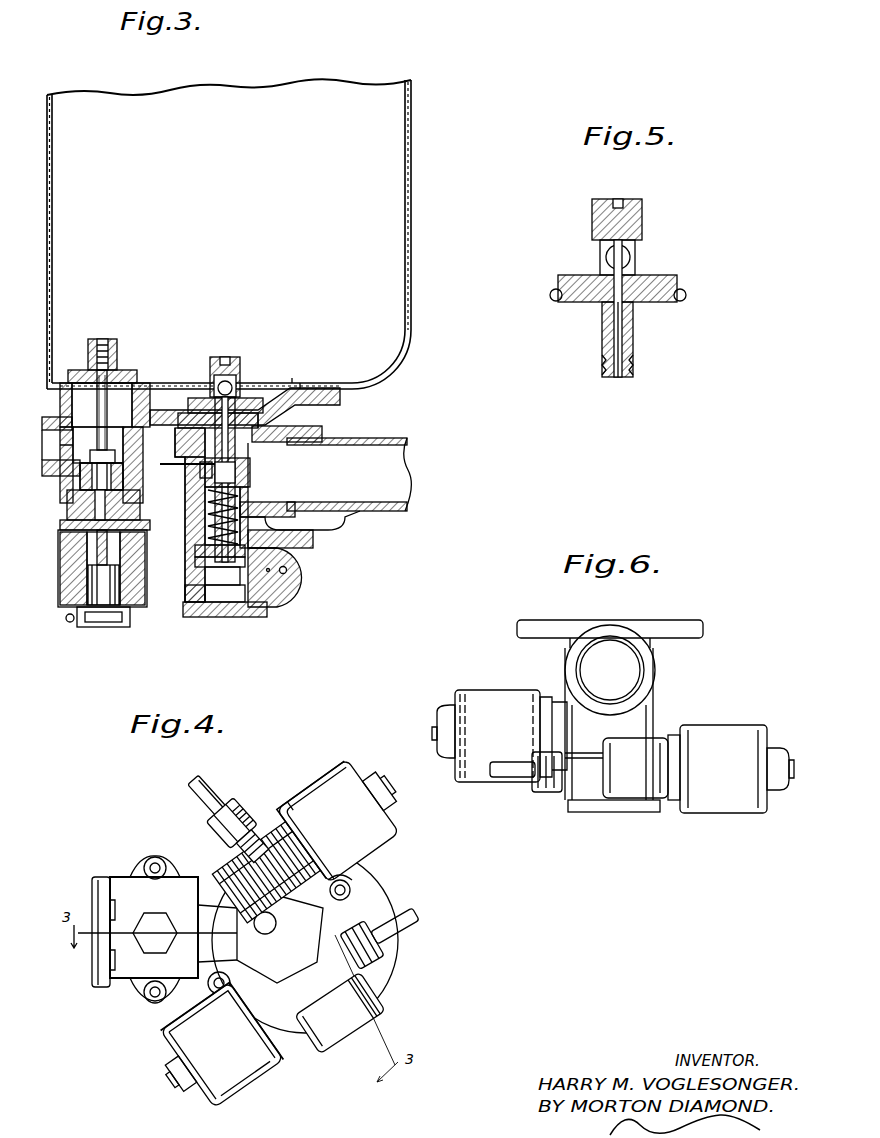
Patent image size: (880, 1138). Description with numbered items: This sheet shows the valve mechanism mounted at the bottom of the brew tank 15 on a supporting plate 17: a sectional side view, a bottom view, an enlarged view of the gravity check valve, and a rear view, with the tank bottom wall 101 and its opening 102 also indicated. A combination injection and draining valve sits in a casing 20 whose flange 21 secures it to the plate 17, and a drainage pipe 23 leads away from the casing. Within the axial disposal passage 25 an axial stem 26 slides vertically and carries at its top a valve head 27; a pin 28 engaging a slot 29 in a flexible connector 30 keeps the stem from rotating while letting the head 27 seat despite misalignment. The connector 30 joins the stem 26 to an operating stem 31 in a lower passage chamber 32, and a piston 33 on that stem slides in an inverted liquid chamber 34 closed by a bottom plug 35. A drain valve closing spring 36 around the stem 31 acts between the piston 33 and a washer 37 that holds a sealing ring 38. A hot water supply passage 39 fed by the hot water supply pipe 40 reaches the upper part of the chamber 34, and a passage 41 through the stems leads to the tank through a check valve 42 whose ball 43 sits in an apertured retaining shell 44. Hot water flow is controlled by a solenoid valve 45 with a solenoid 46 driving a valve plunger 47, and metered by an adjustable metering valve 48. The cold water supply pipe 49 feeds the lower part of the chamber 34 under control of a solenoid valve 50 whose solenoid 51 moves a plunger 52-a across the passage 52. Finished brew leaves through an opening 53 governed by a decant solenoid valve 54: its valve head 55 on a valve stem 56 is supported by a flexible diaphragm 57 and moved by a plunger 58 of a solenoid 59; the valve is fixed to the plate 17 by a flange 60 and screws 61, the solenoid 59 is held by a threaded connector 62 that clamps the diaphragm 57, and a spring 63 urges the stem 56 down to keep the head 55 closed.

In FIG. 3, the brew tank 15 is at (411, 234).
In FIG. 3, the supporting plate 17 is at (330, 402).
In FIG. 4, the supporting plate 17 is at (396, 965).
In FIG. 3, the casing 20 is at (190, 585).
In FIG. 6, the casing 20 is at (650, 712).
In FIG. 6, the flange 21 is at (703, 628).
In FIG. 4, the flange 21 is at (352, 893).
In FIG. 3, the drainage pipe 23 is at (392, 438).
In FIG. 3, the axial disposal passage 25 is at (200, 440).
In FIG. 3, the axial stem 26 is at (215, 450).
In FIG. 5, the axial stem 26 is at (633, 337).
In FIG. 3, the valve head 27 is at (200, 398).
In FIG. 5, the valve head 27 is at (668, 280).
In FIG. 3, the pin 28 is at (205, 470).
In FIG. 3, the slot 29 is at (200, 490).
In FIG. 3, the flexible connector 30 is at (250, 466).
In FIG. 3, the operating stem 31 is at (215, 522).
In FIG. 3, the lower passage chamber 32 is at (290, 538).
In FIG. 3, the piston 33 is at (195, 563).
In FIG. 3, the inverted liquid chamber 34 is at (195, 552).
In FIG. 3, the bottom plug 35 is at (225, 617).
In FIG. 6, the bottom plug 35 is at (605, 812).
In FIG. 3, the drain valve closing spring 36 is at (280, 550).
In FIG. 3, the washer 37 is at (270, 508).
In FIG. 3, the sealing ring 38 is at (250, 500).
In FIG. 4, the hot water supply passage 39 is at (276, 925).
In FIG. 4, the hot water supply pipe 40 is at (222, 796).
In FIG. 3, the passage 41 is at (300, 523).
In FIG. 5, the passage 41 is at (618, 377).
In FIG. 3, the check valve 42 is at (212, 386).
In FIG. 5, the check valve 42 is at (603, 258).
In FIG. 3, the ball 43 is at (226, 355).
In FIG. 5, the ball 43 is at (642, 208).
In FIG. 3, the retaining shell 44 is at (242, 380).
In FIG. 6, the solenoid valve 45 is at (505, 686).
In FIG. 4, the solenoid valve 45 is at (303, 792).
In FIG. 4, the solenoid 46 is at (328, 784).
In FIG. 4, the valve plunger 47 is at (300, 858).
In FIG. 4, the metering valve 48 is at (232, 842).
In FIG. 6, the cold water supply pipe 49 is at (515, 778).
In FIG. 4, the cold water supply pipe 49 is at (415, 915).
In FIG. 6, the solenoid valve 50 is at (736, 718).
In FIG. 4, the solenoid valve 50 is at (277, 1078).
In FIG. 4, the solenoid 51 is at (242, 1084).
In FIG. 3, the passage 52 is at (290, 592).
In FIG. 3, the plunger 52-a is at (287, 571).
In FIG. 3, the opening 53 is at (122, 392).
In FIG. 3, the decant solenoid valve 54 is at (60, 507).
In FIG. 3, the valve head 55 is at (80, 370).
In FIG. 3, the valve stem 56 is at (95, 403).
In FIG. 3, the flexible diaphragm 57 is at (85, 460).
In FIG. 3, the plunger 58 is at (100, 548).
In FIG. 3, the solenoid 59 is at (70, 590).
In FIG. 4, the flange 60 is at (135, 880).
In FIG. 4, the screws 61 is at (148, 858).
In FIG. 3, the connector 62 is at (59, 491).
In FIG. 3, the spring 63 is at (180, 467).
In FIG. 3, the tank bottom wall 101 is at (300, 383).
In FIG. 3, the tank opening 102 is at (290, 378).